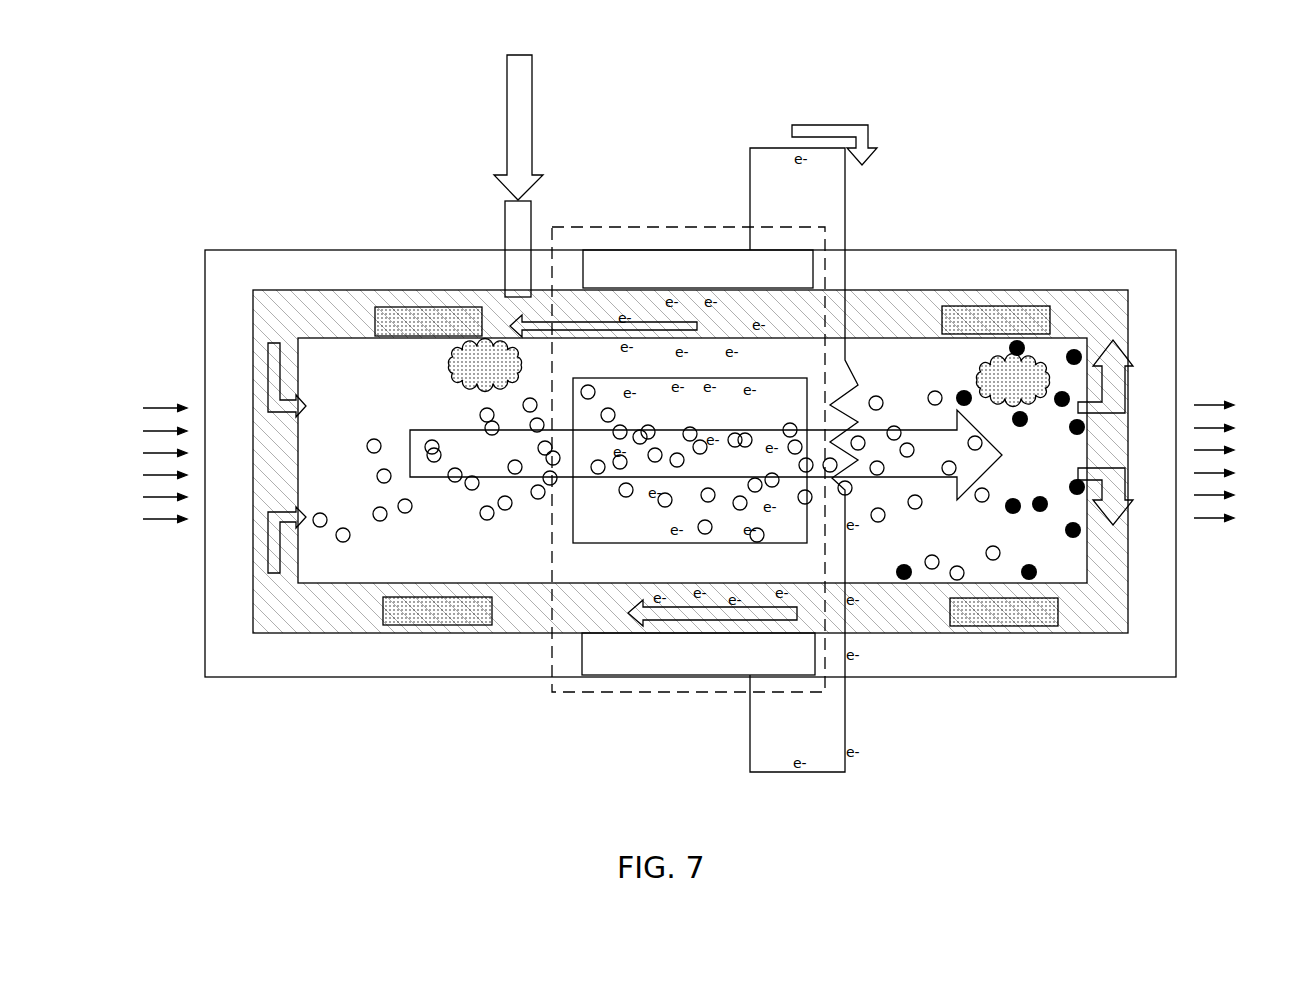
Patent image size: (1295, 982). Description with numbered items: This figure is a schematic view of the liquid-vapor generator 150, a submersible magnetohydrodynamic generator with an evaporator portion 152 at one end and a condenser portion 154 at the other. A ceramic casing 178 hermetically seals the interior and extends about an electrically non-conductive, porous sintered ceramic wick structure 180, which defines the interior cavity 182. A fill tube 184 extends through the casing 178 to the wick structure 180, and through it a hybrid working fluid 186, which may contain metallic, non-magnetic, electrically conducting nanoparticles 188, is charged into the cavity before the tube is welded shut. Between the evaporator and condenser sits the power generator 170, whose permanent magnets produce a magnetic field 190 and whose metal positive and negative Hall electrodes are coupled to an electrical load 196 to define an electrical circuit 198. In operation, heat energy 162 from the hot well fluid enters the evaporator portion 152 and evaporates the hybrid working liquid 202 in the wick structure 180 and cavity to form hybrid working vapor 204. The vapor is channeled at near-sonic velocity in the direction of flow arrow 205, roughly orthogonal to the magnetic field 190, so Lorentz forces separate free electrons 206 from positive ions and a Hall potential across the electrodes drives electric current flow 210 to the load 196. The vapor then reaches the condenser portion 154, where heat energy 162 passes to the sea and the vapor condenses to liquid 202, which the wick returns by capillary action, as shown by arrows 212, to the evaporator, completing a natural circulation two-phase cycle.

The liquid-vapor generator 150 is at (683, 106).
The evaporator portion 152 is at (185, 293).
The condenser portion 154 is at (1205, 283).
The heat energy 162 is at (124, 490).
The power generator 170 is at (632, 705).
The casing 178 is at (955, 256).
The wick structure 180 is at (296, 615).
The interior cavity 182 is at (692, 460).
The fill tube 184 is at (508, 216).
The hybrid working fluid 186 is at (516, 99).
The nanoparticles 188 is at (497, 360).
The magnetic field 190 is at (630, 539).
The electrical load 196 is at (840, 440).
The electrical circuit 198 is at (778, 782).
The hybrid working liquid 202 is at (270, 357).
The hybrid working vapor 204 is at (342, 370).
The flow arrow 205 is at (1067, 509).
The free electrons 206 is at (732, 322).
The electric current flow 210 is at (826, 125).
The arrows 212 is at (566, 322).